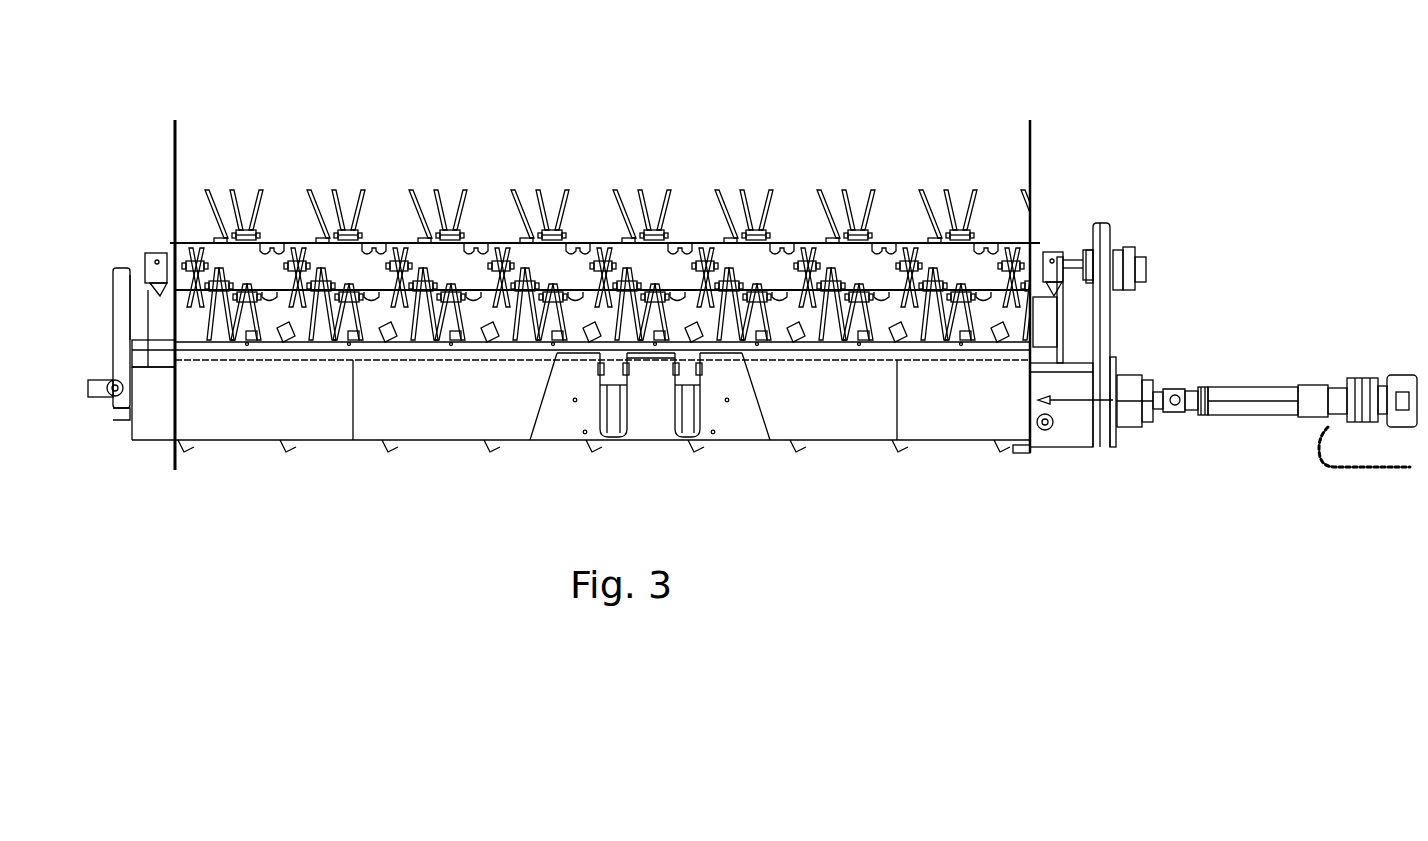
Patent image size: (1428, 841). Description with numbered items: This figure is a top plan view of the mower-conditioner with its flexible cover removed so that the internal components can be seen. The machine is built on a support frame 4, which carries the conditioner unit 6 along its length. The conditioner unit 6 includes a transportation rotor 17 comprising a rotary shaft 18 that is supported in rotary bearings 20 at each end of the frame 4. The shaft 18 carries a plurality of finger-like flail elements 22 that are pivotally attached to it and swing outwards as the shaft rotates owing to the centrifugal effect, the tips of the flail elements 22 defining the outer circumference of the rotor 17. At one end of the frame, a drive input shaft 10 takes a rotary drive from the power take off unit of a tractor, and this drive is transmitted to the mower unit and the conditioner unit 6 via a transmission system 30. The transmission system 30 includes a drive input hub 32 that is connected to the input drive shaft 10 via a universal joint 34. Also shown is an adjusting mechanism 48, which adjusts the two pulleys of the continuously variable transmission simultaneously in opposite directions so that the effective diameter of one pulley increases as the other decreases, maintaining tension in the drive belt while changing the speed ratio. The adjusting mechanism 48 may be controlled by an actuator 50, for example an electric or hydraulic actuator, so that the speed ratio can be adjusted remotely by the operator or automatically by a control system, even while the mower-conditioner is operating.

The support frame 4 is at (435, 410).
The conditioner unit 6 is at (640, 238).
The drive input shaft 10 is at (1268, 412).
The transportation rotor 17 is at (673, 98).
The rotary shaft 18 is at (858, 268).
The rotary bearings 20 is at (150, 255).
The flail elements 22 is at (440, 195).
The transmission system 30 is at (1223, 327).
The drive input hub 32 is at (1128, 422).
The universal joint 34 is at (1181, 388).
The adjusting mechanism 48 is at (1126, 160).
The actuator 50 is at (1143, 255).